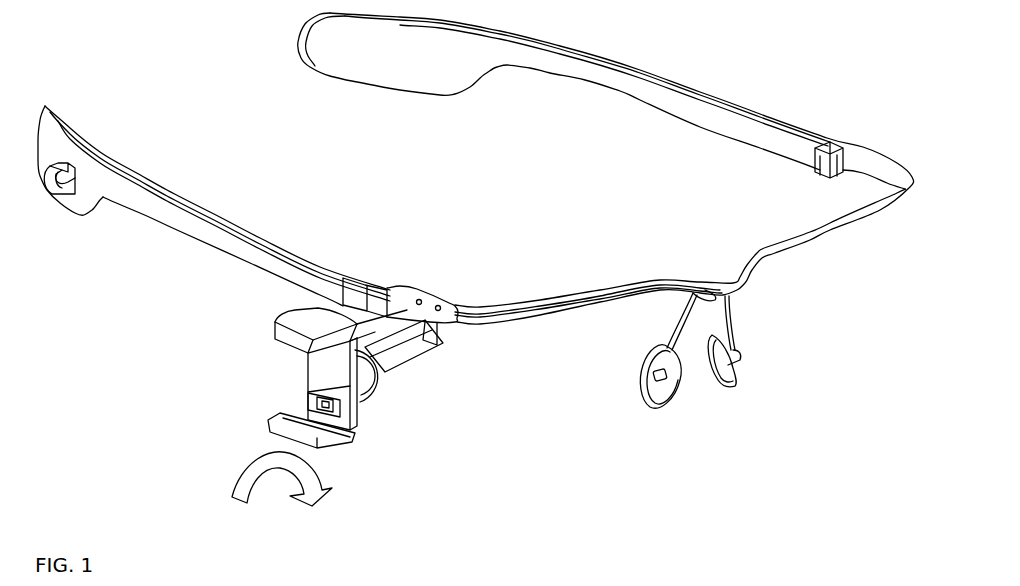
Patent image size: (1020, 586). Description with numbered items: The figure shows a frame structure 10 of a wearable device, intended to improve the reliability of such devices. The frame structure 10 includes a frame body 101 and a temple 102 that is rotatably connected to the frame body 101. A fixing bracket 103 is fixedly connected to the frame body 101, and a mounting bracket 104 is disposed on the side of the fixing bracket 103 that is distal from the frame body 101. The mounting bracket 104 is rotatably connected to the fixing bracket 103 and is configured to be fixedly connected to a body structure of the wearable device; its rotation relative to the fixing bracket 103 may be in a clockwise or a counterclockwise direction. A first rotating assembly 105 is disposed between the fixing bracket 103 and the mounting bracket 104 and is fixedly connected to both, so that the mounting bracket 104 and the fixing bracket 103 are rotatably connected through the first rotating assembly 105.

The frame structure 10 is at (74, 78).
The frame body 101 is at (573, 310).
The temple 102 is at (253, 250).
The fixing bracket 103 is at (422, 325).
The mounting bracket 104 is at (303, 320).
The first rotating assembly 105 is at (352, 358).